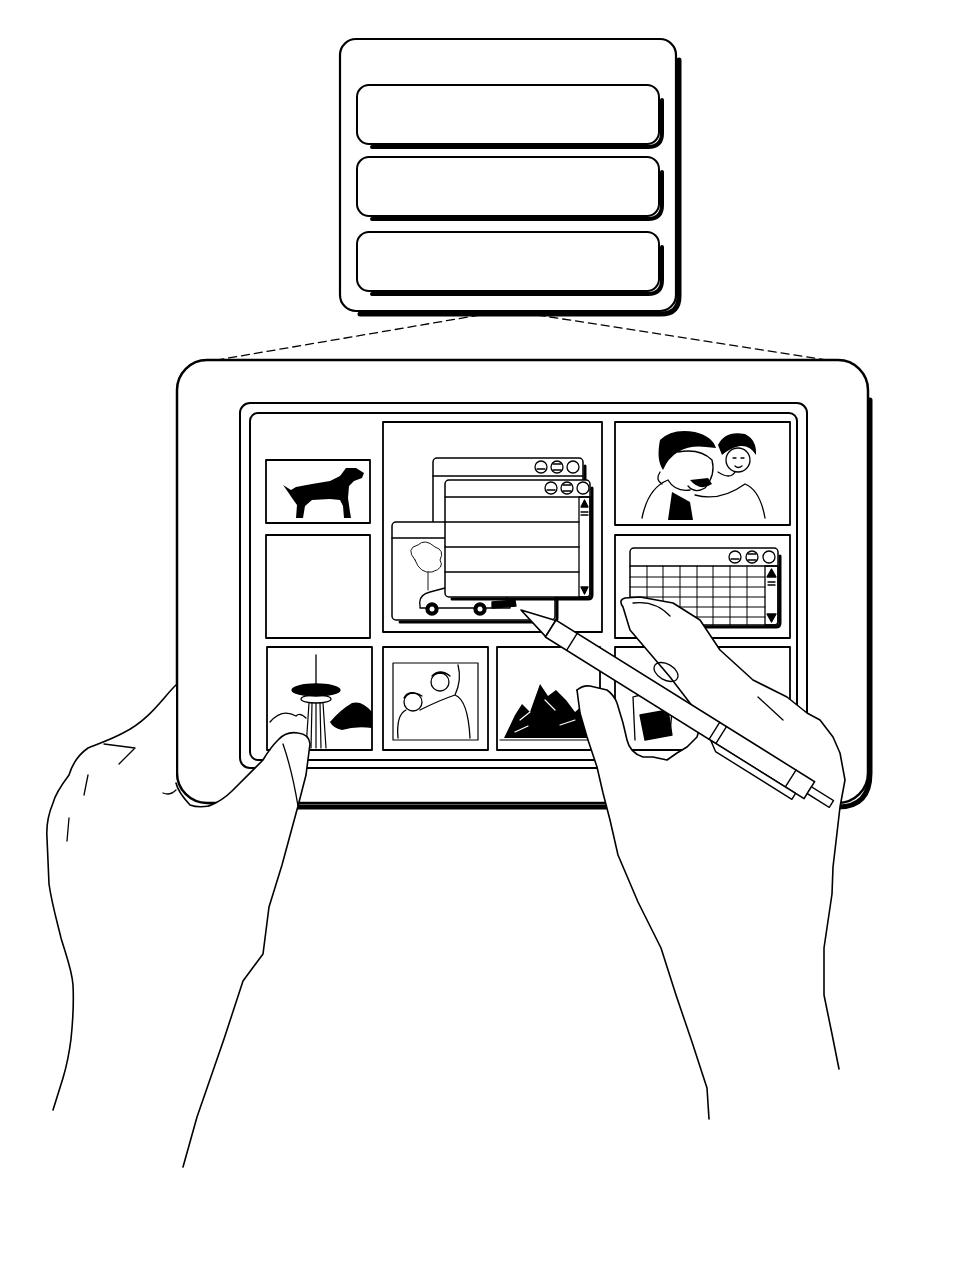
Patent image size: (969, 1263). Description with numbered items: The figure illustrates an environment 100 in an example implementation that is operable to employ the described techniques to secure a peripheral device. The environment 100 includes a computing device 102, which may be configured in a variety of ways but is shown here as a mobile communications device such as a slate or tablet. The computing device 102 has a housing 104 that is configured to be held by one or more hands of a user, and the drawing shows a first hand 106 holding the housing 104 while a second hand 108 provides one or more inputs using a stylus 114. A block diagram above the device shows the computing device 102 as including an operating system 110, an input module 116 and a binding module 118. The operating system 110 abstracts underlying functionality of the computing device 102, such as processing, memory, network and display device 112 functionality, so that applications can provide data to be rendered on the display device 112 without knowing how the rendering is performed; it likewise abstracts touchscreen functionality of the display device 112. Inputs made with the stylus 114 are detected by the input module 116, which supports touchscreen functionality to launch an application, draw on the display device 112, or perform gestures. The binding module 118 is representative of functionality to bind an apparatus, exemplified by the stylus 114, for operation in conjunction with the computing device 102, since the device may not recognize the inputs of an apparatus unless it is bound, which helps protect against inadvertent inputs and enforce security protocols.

The environment 100 is at (169, 62).
The computing device 102 is at (509, 176).
The housing 104 is at (178, 470).
The first hand 106 is at (177, 909).
The second hand 108 is at (752, 857).
The operating system 110 is at (509, 116).
The display device 112 is at (246, 580).
The stylus 114 is at (762, 787).
The input module 116 is at (509, 188).
The binding module 118 is at (509, 263).